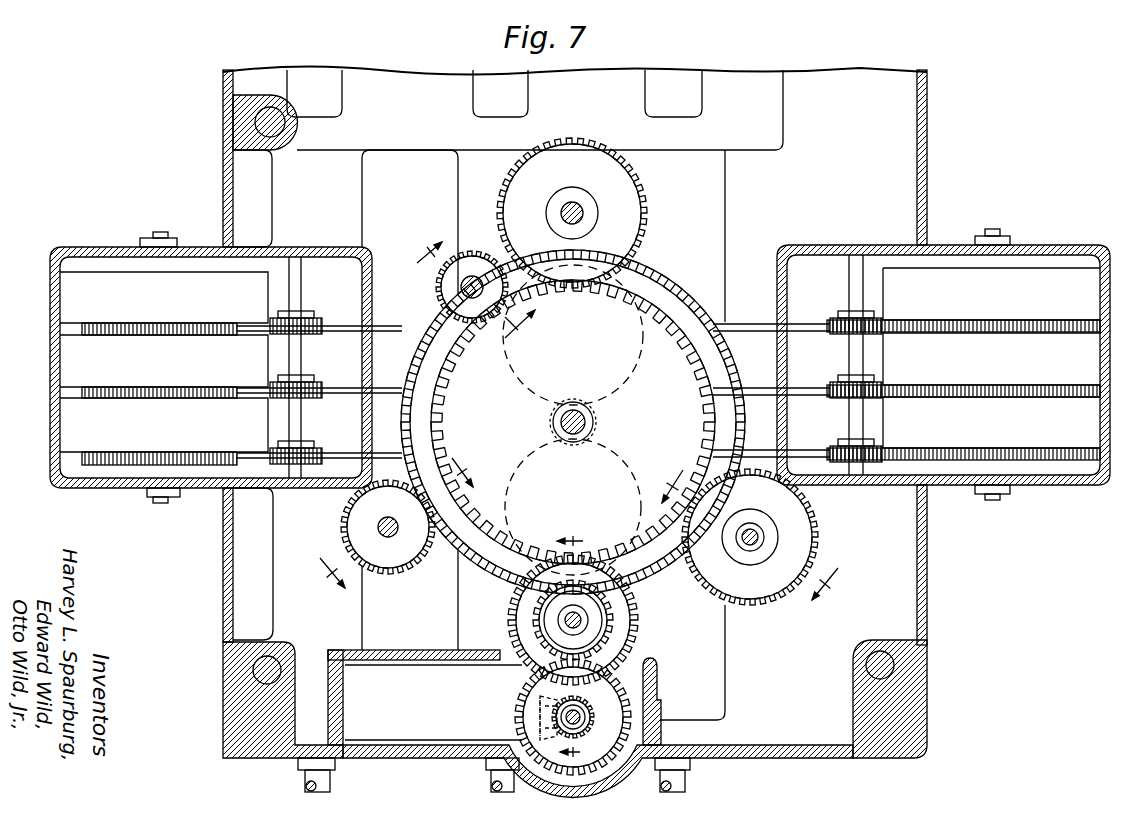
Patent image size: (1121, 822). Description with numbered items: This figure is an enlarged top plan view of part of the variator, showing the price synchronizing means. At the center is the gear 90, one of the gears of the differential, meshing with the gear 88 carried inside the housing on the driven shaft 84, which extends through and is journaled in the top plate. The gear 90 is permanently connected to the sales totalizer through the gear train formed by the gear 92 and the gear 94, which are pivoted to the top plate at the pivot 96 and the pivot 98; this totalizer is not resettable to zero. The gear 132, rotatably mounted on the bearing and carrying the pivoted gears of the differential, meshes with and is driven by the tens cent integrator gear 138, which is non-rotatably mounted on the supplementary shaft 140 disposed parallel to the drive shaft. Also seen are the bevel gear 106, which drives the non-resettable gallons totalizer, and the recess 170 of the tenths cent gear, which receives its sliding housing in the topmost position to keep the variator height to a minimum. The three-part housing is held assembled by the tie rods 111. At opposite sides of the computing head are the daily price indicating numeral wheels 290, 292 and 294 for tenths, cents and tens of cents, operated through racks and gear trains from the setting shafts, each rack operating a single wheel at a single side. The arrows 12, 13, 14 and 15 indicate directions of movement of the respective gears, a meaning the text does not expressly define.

The direction arrow 12 is at (754, 532).
The direction arrow 13 is at (476, 286).
The direction arrow 14 is at (396, 524).
The direction arrow 15 is at (579, 637).
The driven shaft 84 is at (474, 278).
The gear 88 is at (438, 295).
The gear 90 is at (660, 318).
The gear 92 is at (643, 630).
The gear 94 is at (643, 695).
The pivot 96 is at (588, 618).
The pivot 98 is at (543, 717).
The bevel gear 106 is at (522, 695).
The tie rods 111 is at (895, 665).
The gear 132 is at (486, 562).
The tens cent integrator gear 138 is at (395, 562).
The supplementary shaft 140 is at (385, 525).
The recess 170 is at (808, 530).
The numeral wheel 290 is at (60, 286).
The numeral wheel 292 is at (60, 345).
The numeral wheel 294 is at (60, 410).